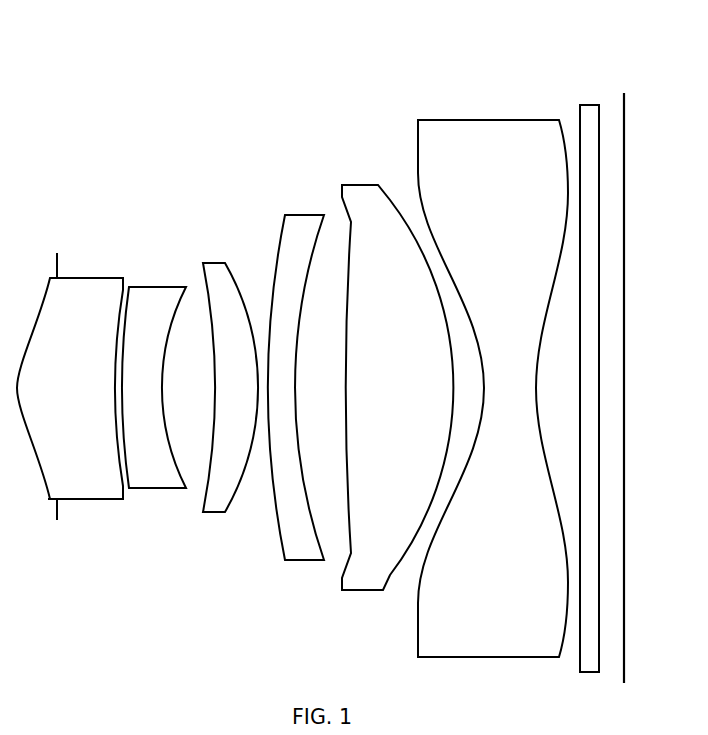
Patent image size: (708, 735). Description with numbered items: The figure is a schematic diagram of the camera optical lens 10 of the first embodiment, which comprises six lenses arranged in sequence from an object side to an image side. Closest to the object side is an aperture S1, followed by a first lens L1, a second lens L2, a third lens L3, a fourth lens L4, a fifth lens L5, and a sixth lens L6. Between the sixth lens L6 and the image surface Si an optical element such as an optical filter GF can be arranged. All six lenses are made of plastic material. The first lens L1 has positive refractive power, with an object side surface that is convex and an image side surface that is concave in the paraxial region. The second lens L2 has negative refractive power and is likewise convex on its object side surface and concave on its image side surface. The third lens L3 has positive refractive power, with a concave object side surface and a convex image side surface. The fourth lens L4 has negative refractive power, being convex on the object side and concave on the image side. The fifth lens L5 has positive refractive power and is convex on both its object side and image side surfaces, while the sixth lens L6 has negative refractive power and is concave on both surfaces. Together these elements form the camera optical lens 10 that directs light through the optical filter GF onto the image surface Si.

The camera optical lens 10 is at (305, 50).
The aperture S1 is at (45, 384).
The first lens L1 is at (70, 374).
The second lens L2 is at (154, 373).
The third lens L3 is at (230, 377).
The fourth lens L4 is at (296, 374).
The fifth lens L5 is at (397, 375).
The sixth lens L6 is at (493, 376).
The optical filter GF is at (591, 376).
The image surface Si is at (629, 374).